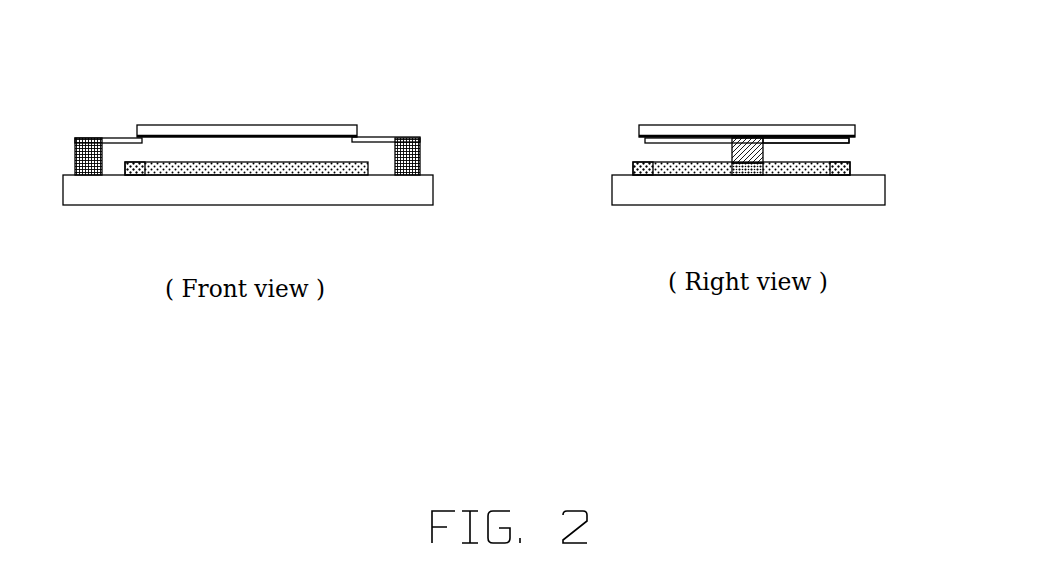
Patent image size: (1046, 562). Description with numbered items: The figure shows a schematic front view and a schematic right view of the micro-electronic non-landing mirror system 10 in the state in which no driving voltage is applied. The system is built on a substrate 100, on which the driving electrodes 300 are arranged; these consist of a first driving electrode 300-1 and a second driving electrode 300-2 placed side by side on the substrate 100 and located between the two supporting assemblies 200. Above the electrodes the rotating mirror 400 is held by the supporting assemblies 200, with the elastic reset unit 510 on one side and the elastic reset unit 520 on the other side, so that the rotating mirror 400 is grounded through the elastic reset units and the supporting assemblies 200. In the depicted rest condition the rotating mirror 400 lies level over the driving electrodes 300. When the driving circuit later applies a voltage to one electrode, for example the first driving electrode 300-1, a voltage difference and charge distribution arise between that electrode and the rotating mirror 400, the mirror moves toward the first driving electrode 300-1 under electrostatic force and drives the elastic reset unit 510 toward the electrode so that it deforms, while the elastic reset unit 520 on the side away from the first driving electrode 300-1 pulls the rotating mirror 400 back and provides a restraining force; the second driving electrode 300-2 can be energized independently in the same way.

The micro-electronic non-landing mirror system 10 is at (117, 101).
The substrate 100 is at (415, 193).
The supporting assemblies 200 is at (410, 148).
The driving electrodes 300 is at (298, 177).
The first driving electrode 300-1 is at (150, 170).
The second driving electrode 300-2 is at (842, 172).
The rotating mirror 400 is at (247, 125).
The elastic reset unit 510 is at (378, 137).
The elastic reset unit 520 is at (840, 145).